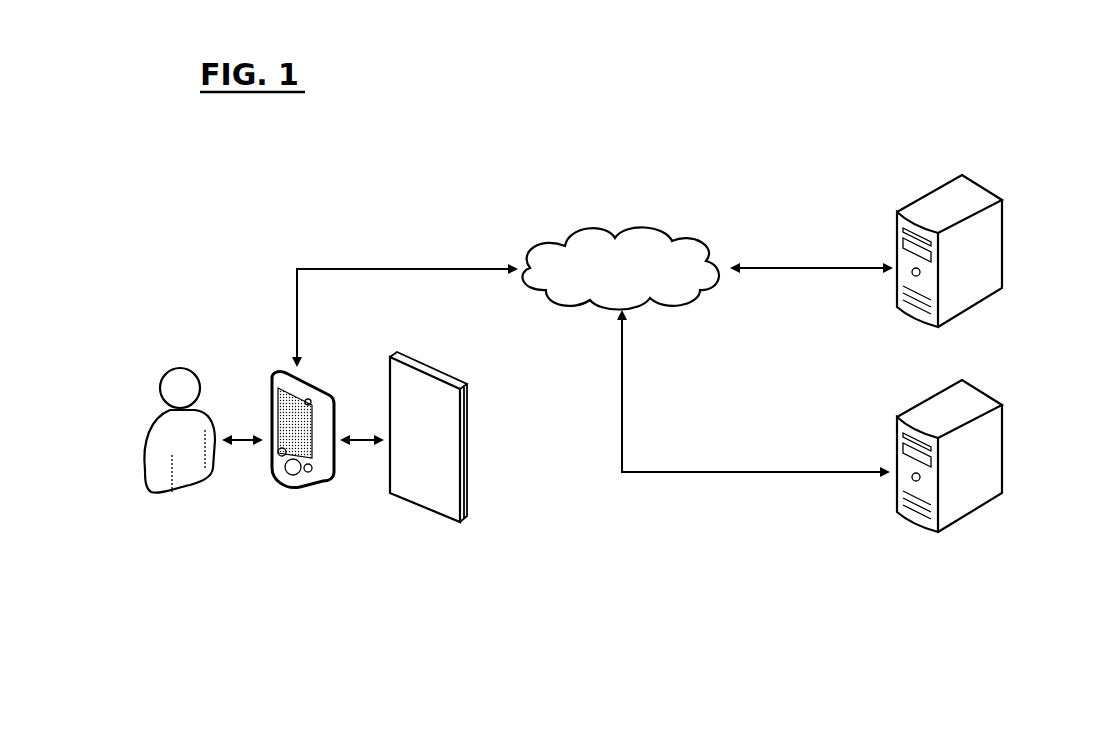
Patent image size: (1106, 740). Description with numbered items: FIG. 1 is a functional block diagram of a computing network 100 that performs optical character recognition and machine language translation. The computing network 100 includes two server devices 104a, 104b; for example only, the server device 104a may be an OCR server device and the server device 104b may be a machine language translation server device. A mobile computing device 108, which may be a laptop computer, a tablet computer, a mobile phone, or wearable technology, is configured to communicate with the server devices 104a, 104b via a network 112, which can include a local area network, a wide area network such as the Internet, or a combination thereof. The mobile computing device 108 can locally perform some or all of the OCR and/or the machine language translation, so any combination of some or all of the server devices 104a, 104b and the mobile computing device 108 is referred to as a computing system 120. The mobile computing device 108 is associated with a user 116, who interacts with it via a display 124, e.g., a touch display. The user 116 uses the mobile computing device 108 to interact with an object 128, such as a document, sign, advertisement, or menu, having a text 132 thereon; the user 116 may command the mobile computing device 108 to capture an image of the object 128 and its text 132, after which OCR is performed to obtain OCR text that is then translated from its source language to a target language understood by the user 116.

The computing network 100 is at (941, 93).
The server device 104a is at (1004, 232).
The server device 104b is at (1004, 437).
The mobile computing device 108 is at (294, 405).
The network 112 is at (624, 228).
The user 116 is at (178, 366).
The computing system 120 is at (818, 562).
The display 124 is at (287, 403).
The object 128 is at (461, 421).
The text 132 is at (430, 426).